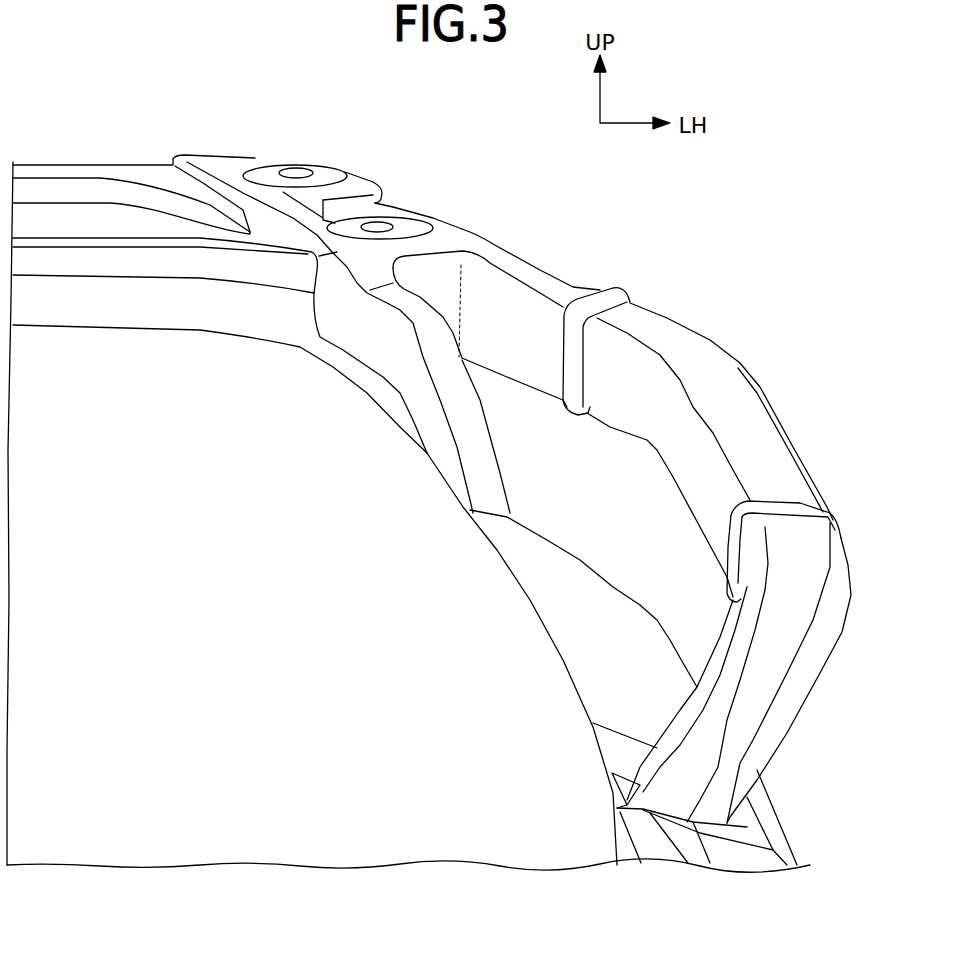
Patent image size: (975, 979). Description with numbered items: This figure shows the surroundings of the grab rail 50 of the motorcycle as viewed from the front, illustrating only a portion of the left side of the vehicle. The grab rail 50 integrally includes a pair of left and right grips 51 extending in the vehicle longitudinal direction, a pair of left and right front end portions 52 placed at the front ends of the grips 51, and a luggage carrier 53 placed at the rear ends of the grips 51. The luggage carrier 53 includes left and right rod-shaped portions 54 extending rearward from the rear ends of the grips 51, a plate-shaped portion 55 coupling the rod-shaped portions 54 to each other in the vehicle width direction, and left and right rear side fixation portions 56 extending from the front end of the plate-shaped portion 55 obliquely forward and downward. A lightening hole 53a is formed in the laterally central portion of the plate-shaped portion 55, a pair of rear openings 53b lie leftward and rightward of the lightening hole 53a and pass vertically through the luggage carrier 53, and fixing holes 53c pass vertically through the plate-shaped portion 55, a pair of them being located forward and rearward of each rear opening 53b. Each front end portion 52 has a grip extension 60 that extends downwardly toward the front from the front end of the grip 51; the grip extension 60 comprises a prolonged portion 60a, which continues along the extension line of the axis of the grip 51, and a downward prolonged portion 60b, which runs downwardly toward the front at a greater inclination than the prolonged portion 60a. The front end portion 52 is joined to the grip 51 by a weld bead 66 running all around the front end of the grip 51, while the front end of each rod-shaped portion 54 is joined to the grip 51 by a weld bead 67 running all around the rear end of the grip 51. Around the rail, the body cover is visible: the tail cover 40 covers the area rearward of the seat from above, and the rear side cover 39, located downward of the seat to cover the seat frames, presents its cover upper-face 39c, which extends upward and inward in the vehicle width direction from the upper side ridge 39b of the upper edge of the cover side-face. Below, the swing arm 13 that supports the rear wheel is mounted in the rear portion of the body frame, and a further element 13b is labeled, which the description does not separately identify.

The swing arm 13 is at (88, 866).
The door inner panel 13b is at (219, 657).
The rear side cover 39 is at (772, 866).
The upper side ridge 39b is at (787, 847).
The cover upper-face 39c is at (617, 705).
The tail cover 40 is at (118, 340).
The grab rail 50 is at (666, 317).
The grip 51 is at (753, 423).
The front end portion 52 is at (795, 727).
The luggage carrier 53 is at (41, 163).
The lightening hole 53a is at (78, 190).
The rear opening 53b is at (330, 212).
The fixing hole 53c is at (298, 165).
The rod-shaped portion 54 is at (387, 202).
The plate-shaped portion 55 is at (133, 173).
The rear side fixation portion 56 is at (473, 427).
The grip extension 60 is at (819, 671).
The prolonged portion 60a is at (810, 557).
The downward prolonged portion 60b is at (750, 757).
The weld bead 66 is at (800, 505).
The weld bead 67 is at (617, 287).